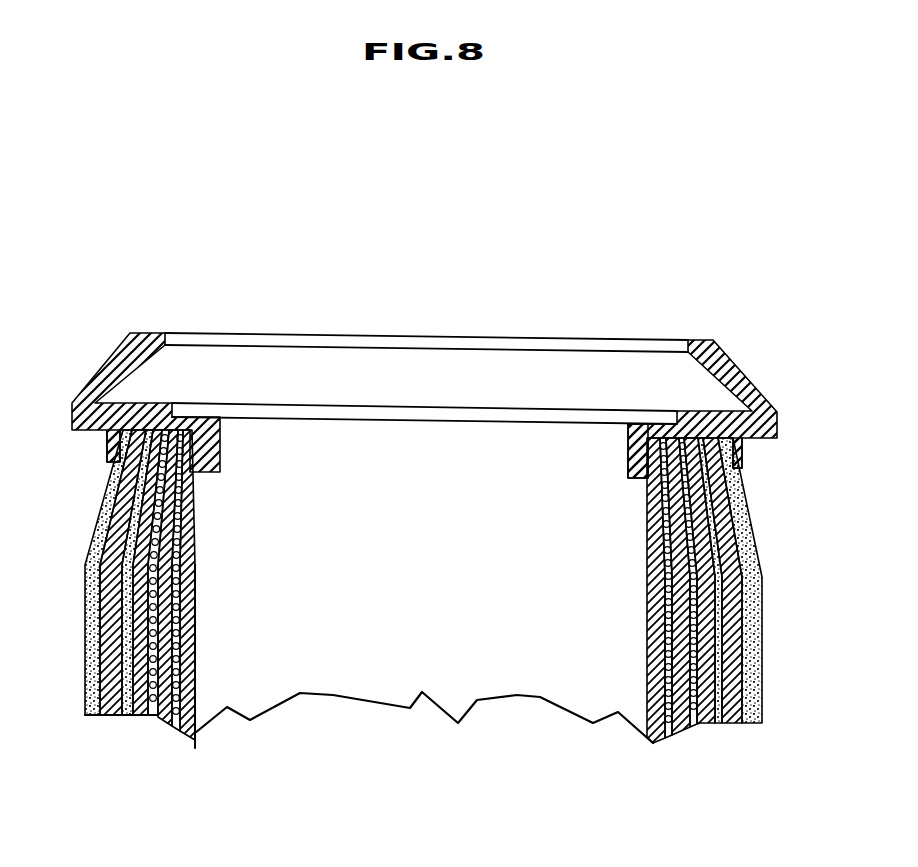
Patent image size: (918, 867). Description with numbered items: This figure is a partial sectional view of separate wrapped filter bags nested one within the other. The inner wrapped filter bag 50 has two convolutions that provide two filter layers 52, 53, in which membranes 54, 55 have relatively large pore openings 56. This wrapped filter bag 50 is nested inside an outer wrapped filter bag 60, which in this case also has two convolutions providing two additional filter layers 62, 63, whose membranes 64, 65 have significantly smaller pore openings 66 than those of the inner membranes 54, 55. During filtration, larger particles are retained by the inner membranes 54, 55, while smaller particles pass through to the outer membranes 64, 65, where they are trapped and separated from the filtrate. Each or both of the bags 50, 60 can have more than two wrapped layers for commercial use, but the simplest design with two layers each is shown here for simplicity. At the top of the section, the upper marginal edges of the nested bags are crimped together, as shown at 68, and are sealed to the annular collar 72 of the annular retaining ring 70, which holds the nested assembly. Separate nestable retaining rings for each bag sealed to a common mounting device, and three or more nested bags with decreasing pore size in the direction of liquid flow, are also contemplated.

The wrapped filter bag 50 is at (200, 663).
The filter layer 52 is at (177, 712).
The filter layer 53 is at (163, 723).
The membrane 54 is at (185, 703).
The membrane 55 is at (122, 712).
The pore openings 56 is at (175, 578).
The outer wrapped filter bag 60 is at (83, 620).
The filter layer 62 is at (108, 590).
The filter layer 63 is at (115, 512).
The membrane 64 is at (125, 540).
The membrane 65 is at (100, 557).
The pore openings 66 is at (113, 477).
The crimped upper marginal edges 68 is at (742, 502).
The annular retaining ring 70 is at (750, 380).
The annular collar 72 is at (743, 453).